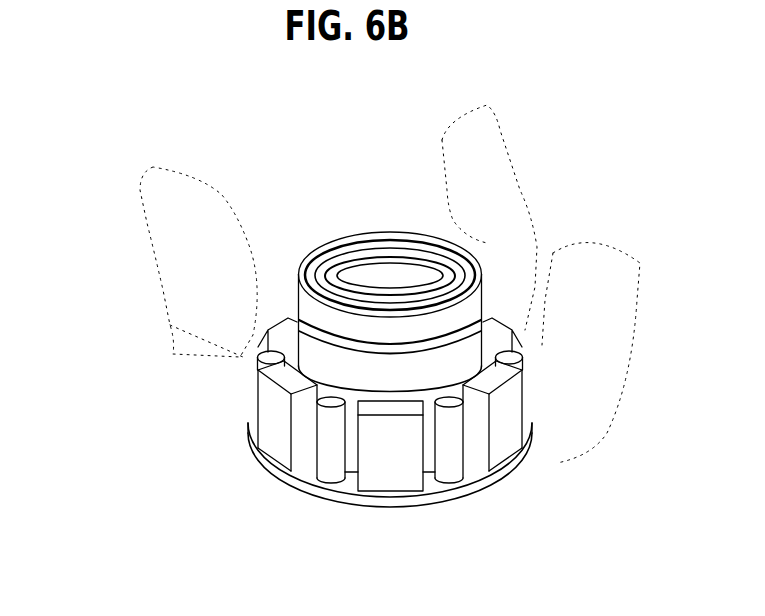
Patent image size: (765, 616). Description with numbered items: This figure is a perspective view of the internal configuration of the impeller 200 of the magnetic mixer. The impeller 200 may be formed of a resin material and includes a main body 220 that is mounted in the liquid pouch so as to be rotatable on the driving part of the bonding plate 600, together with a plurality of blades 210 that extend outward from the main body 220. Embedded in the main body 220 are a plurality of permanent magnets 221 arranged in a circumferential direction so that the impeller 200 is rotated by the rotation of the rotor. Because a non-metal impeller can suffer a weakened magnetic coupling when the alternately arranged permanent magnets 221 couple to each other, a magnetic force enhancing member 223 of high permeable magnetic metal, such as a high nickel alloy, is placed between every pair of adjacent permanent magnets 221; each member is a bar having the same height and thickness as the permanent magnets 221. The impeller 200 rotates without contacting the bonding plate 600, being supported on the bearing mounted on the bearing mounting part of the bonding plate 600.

The impeller 200 is at (110, 360).
The blades 210 is at (172, 356).
The main body 220 is at (258, 371).
The permanent magnets 221 is at (387, 472).
The magnetic force enhancing member 223 is at (327, 445).
The bonding plate 600 is at (503, 492).